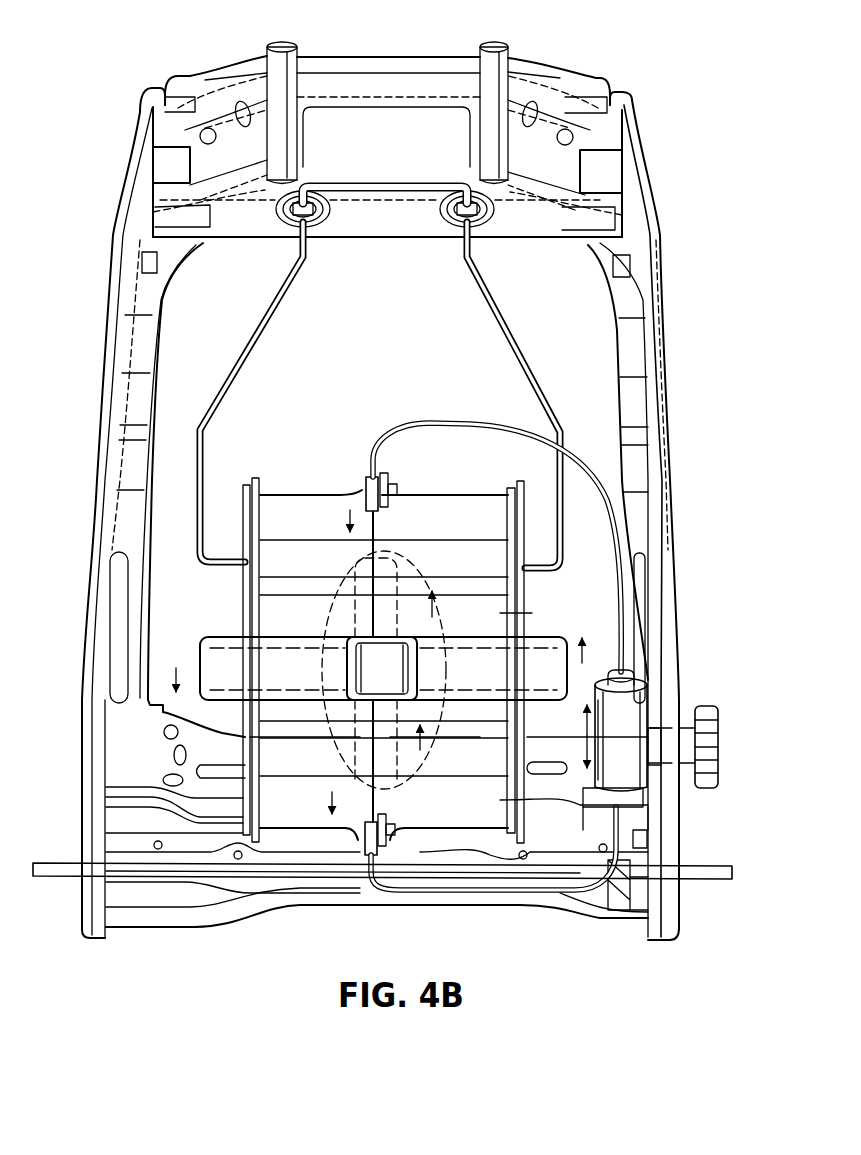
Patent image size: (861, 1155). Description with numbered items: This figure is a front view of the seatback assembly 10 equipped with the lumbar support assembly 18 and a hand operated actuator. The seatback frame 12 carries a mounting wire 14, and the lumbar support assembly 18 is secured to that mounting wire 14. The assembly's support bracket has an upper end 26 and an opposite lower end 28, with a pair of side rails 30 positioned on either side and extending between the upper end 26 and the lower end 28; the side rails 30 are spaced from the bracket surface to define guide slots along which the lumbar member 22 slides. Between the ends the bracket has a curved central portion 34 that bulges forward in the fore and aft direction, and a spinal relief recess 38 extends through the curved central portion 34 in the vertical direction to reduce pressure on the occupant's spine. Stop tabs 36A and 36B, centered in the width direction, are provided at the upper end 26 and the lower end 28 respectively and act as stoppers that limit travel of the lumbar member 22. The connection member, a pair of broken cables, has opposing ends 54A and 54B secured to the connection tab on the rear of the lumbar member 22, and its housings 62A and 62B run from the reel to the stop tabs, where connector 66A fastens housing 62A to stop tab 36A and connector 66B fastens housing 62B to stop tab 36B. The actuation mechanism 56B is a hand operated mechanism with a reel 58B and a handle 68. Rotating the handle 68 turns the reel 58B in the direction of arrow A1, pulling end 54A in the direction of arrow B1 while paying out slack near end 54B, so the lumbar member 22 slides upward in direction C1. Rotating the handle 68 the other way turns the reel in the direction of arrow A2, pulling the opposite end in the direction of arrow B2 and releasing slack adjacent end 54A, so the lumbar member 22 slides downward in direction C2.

The seatback assembly 10 is at (93, 53).
The seatback frame 12 is at (632, 172).
The mounting wire 14 is at (525, 350).
The lumbar support assembly 18 is at (353, 350).
The lumbar member 22 is at (509, 684).
The upper end 26 is at (280, 495).
The lower end 28 is at (483, 832).
The side rails 30 is at (248, 598).
The curved central portion 34 is at (500, 613).
The stop tab 36A is at (390, 498).
The stop tab 36B is at (386, 848).
The spinal relief recess 38 is at (420, 615).
The end of connection member 54A is at (375, 540).
The end of connection member 54B is at (380, 790).
The actuation mechanism 56B is at (653, 668).
The reel 58B is at (626, 737).
The housing 62A is at (418, 428).
The housing 62B is at (560, 893).
The connector 66A is at (370, 482).
The connector 66B is at (372, 850).
The handle 68 is at (714, 727).
The arrow A1 is at (573, 752).
The arrow A2 is at (573, 720).
The arrow B1 is at (438, 679).
The arrow B2 is at (325, 661).
The arrow C1 is at (585, 661).
The arrow C2 is at (178, 667).